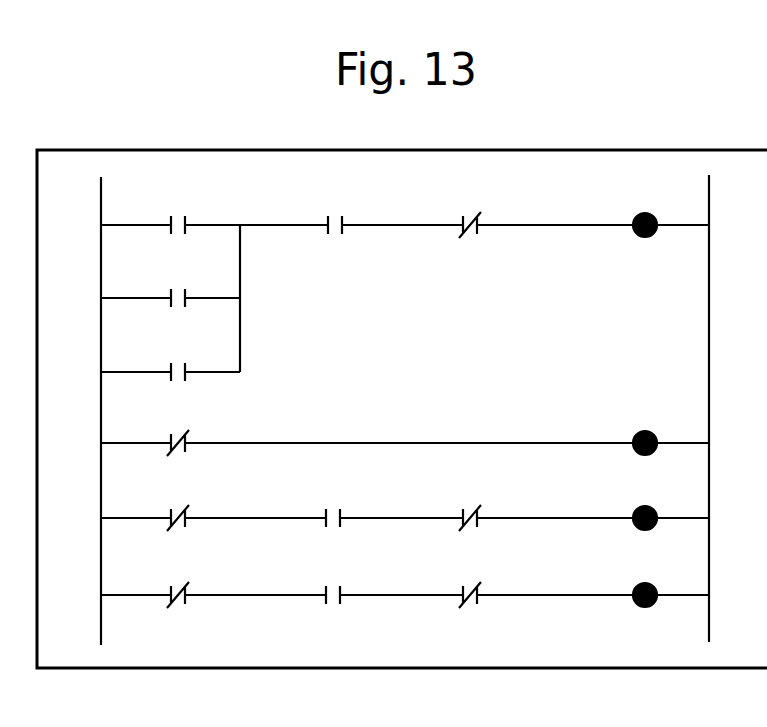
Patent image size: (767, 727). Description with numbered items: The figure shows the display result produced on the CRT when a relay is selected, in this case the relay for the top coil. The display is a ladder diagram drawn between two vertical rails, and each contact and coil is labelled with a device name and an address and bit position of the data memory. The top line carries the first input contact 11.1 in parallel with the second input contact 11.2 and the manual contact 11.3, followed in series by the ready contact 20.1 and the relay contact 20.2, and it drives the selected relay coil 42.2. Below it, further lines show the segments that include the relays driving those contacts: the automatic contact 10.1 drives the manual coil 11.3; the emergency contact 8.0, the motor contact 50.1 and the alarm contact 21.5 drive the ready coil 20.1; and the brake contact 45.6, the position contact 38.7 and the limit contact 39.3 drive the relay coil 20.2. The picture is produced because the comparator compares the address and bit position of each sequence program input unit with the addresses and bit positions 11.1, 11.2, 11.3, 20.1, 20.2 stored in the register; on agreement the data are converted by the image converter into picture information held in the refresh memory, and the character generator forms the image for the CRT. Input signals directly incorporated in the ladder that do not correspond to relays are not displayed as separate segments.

The data memory address and bit position 11.1 is at (178, 226).
The data memory address and bit position 20.1 is at (491, 372).
The data memory address and bit position 20.2 is at (557, 411).
The CRA coil 42.2 is at (645, 224).
The data memory address and bit position 11.2 is at (178, 301).
The data memory address and bit position 11.3 is at (412, 408).
The AUT contact 10.1 is at (178, 444).
The EMG contact 8.0 is at (178, 519).
The MA contact 50.1 is at (333, 519).
The MALM contact 21.5 is at (470, 519).
The CRB contact 45.6 is at (178, 597).
The POS contact 38.7 is at (333, 597).
The LBMM contact 39.3 is at (470, 597).